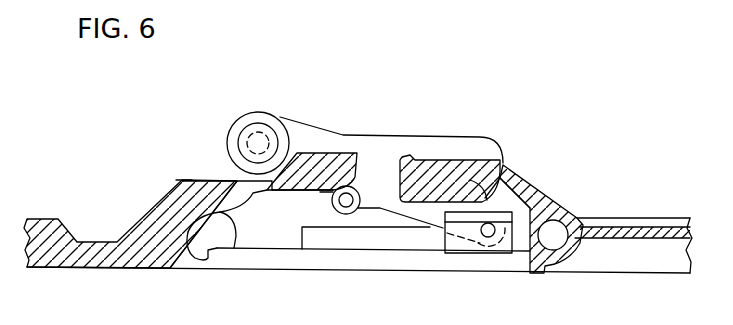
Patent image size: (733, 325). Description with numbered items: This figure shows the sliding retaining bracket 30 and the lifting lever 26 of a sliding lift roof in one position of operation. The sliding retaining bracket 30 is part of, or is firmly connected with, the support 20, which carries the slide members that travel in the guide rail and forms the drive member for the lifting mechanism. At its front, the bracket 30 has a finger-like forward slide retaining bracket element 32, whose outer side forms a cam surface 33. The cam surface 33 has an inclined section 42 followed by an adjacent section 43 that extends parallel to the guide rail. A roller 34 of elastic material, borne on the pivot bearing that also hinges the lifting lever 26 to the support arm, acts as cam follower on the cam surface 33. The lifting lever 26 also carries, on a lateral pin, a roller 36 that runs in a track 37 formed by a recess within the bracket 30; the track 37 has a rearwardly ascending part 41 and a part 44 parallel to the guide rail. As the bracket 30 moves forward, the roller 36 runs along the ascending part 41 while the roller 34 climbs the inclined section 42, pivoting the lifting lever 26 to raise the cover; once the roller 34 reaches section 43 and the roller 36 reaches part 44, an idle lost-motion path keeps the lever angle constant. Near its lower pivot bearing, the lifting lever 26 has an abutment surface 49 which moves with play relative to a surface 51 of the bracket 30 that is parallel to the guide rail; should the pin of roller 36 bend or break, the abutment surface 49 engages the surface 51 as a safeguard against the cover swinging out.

The support 20 is at (635, 257).
The lifting lever 26 is at (435, 152).
The sliding retaining bracket 30 is at (530, 183).
The forward slide retaining bracket element 32 is at (153, 247).
The cam surface 33 is at (180, 177).
The roller 34 is at (267, 120).
The roller 36 is at (360, 188).
The track 37 is at (252, 193).
The rearwardly ascending part 41 is at (233, 249).
The inclined section 42 is at (150, 210).
The section 43 is at (217, 180).
The part 44 is at (293, 195).
The abutment surface 49 is at (493, 180).
The surface 51 is at (437, 197).